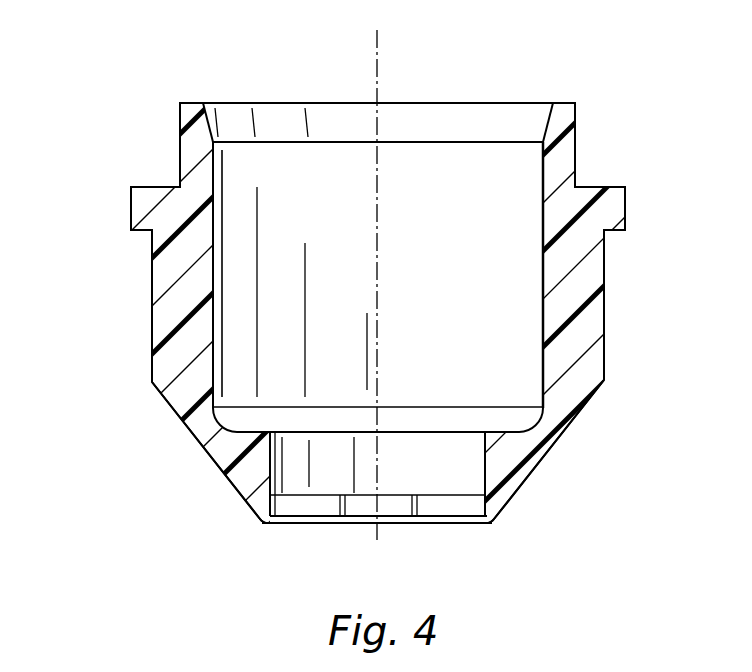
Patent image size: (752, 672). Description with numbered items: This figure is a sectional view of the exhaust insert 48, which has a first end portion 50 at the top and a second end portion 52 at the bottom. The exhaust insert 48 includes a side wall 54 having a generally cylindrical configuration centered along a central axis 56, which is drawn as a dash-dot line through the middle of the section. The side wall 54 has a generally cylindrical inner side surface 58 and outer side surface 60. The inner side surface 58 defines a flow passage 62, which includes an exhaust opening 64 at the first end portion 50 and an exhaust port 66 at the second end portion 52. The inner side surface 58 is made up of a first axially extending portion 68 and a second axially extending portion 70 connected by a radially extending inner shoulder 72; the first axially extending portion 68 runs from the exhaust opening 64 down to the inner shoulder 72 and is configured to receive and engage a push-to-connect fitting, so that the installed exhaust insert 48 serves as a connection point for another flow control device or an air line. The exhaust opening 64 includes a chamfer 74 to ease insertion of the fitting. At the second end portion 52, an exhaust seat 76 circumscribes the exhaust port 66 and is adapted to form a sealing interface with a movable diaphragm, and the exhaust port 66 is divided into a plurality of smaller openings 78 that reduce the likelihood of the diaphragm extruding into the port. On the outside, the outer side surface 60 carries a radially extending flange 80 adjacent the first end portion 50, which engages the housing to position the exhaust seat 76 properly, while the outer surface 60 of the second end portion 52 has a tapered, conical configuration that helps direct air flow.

The exhaust insert 48 is at (130, 93).
The first end portion 50 is at (593, 88).
The second end portion 52 is at (550, 515).
The side wall 54 is at (168, 319).
The central axis 56 is at (375, 57).
The inner side surface 58 is at (222, 258).
The outer side surface 60 is at (605, 317).
The flow passage 62 is at (425, 244).
The exhaust opening 64 is at (277, 113).
The exhaust port 66 is at (290, 537).
The first axially extending portion 68 is at (543, 316).
The second axially extending portion 70 is at (485, 447).
The inner shoulder 72 is at (487, 447).
The chamfer 74 is at (550, 122).
The exhaust seat 76 is at (490, 523).
The smaller openings 78 is at (450, 508).
The flange 80 is at (133, 210).